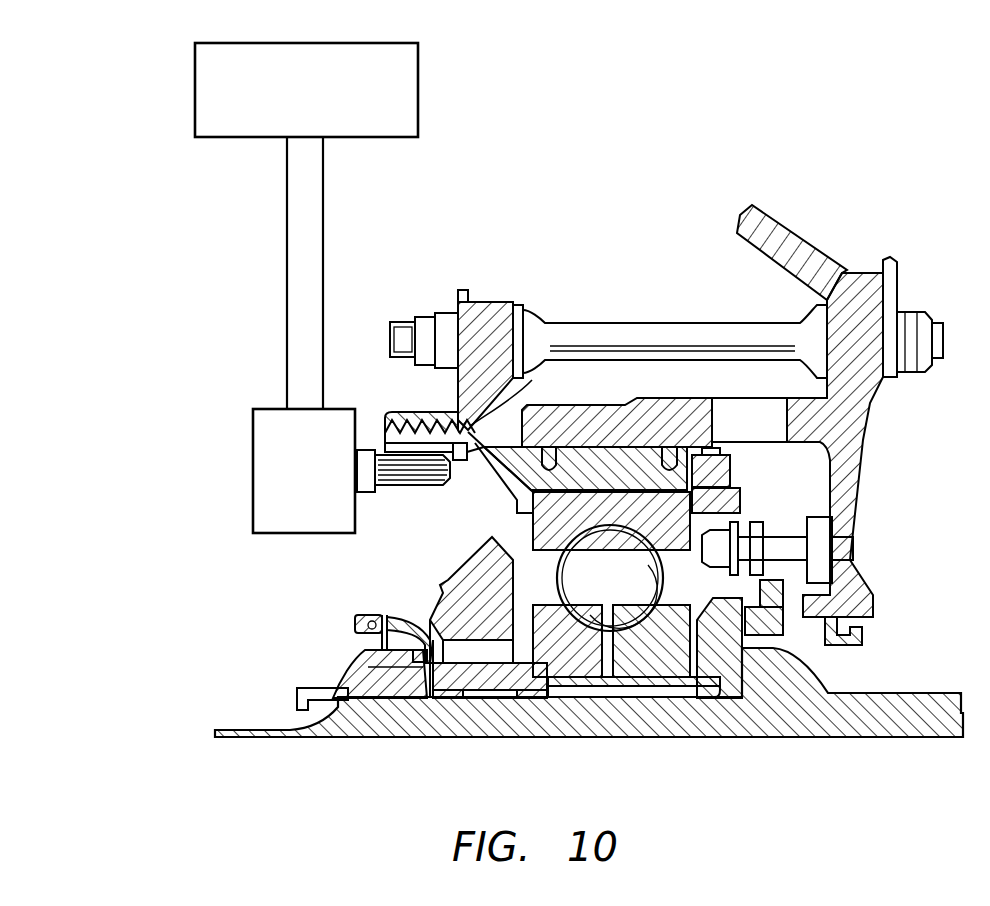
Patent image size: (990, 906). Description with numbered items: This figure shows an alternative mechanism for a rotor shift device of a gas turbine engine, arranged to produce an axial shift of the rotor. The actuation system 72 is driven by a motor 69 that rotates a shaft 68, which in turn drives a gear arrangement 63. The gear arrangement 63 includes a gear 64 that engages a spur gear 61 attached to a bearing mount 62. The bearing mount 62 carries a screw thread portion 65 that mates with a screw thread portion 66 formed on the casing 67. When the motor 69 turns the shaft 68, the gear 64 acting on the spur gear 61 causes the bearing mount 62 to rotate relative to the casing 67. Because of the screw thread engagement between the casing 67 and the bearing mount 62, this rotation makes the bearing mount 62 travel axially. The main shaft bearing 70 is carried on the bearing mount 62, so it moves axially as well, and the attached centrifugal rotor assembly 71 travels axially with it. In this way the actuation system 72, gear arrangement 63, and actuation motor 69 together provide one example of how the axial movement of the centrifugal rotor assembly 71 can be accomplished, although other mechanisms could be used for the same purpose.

The spur gear 61 is at (466, 460).
The bearing mount 62 is at (508, 503).
The gear arrangement 63 is at (320, 497).
The gear 64 is at (406, 486).
The screw thread portion 65 is at (388, 432).
The screw thread portion 66 is at (393, 413).
The casing 67 is at (497, 389).
The shaft 68 is at (287, 272).
The motor 69 is at (322, 103).
The main shaft bearing 70 is at (592, 606).
The centrifugal rotor assembly 71 is at (898, 737).
The actuation system 72 is at (133, 393).